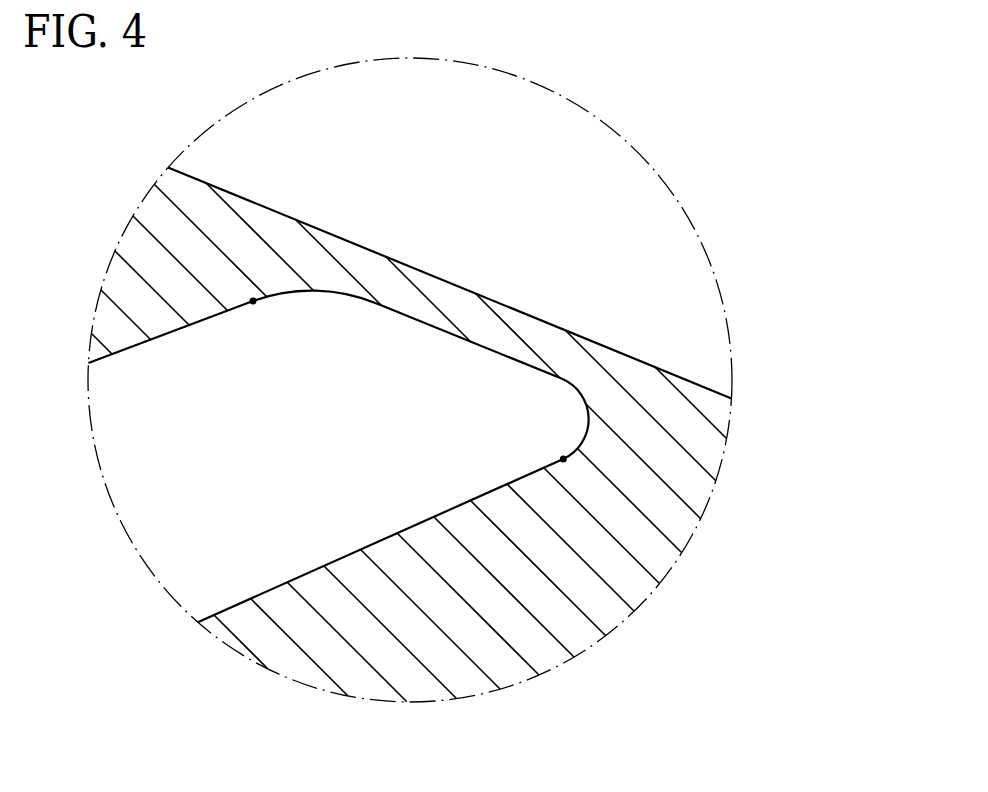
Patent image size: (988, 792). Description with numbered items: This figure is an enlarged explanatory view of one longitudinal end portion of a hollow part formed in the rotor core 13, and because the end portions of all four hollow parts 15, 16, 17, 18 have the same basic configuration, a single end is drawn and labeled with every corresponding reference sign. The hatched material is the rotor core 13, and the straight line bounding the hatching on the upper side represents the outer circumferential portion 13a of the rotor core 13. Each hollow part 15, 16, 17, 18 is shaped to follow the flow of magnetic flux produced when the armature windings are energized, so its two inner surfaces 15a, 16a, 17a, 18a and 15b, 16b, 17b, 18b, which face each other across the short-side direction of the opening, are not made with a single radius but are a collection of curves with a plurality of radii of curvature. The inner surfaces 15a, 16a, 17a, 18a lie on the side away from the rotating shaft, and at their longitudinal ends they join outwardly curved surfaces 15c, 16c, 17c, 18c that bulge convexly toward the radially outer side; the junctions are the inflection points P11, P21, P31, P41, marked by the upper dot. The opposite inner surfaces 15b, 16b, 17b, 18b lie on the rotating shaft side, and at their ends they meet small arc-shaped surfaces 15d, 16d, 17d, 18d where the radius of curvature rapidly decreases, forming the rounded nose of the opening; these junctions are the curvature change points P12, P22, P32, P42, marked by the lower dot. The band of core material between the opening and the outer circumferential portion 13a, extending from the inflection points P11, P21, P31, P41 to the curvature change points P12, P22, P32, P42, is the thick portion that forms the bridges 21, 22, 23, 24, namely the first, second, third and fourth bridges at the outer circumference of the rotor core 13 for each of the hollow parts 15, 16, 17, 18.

The rotor core 13 is at (397, 256).
The inner surface of housing member 13a is at (232, 190).
The hollow part 15 is at (442, 458).
The hollow part 16 is at (442, 458).
The hollow part 17 is at (442, 458).
The hollow part 18 is at (442, 458).
The inner surface 15a is at (144, 505).
The inner surface 16a is at (144, 505).
The inner surface 17a is at (144, 505).
The inner surface 18a is at (132, 347).
The inner surface 15b is at (483, 596).
The inner surface 16b is at (483, 596).
The inner surface 17b is at (483, 596).
The inner surface 18b is at (375, 545).
The outwardly curved surface 15c is at (421, 286).
The outwardly curved surface 16c is at (421, 286).
The outwardly curved surface 17c is at (421, 286).
The outwardly curved surface 18c is at (284, 292).
The small arc-shaped surface 15d is at (581, 348).
The small arc-shaped surface 16d is at (581, 348).
The small arc-shaped surface 17d is at (581, 348).
The small arc-shaped surface 18d is at (585, 418).
The first bridge 21 is at (502, 442).
The second bridge 22 is at (502, 442).
The third bridge 23 is at (502, 442).
The fourth bridge 24 is at (545, 335).
The inflection point P11 is at (363, 226).
The inflection point P21 is at (363, 226).
The inflection point P31 is at (363, 226).
The inflection point P41 is at (253, 301).
The curvature change point P12 is at (705, 566).
The curvature change point P22 is at (705, 566).
The curvature change point P32 is at (705, 566).
The curvature change point P42 is at (563, 459).